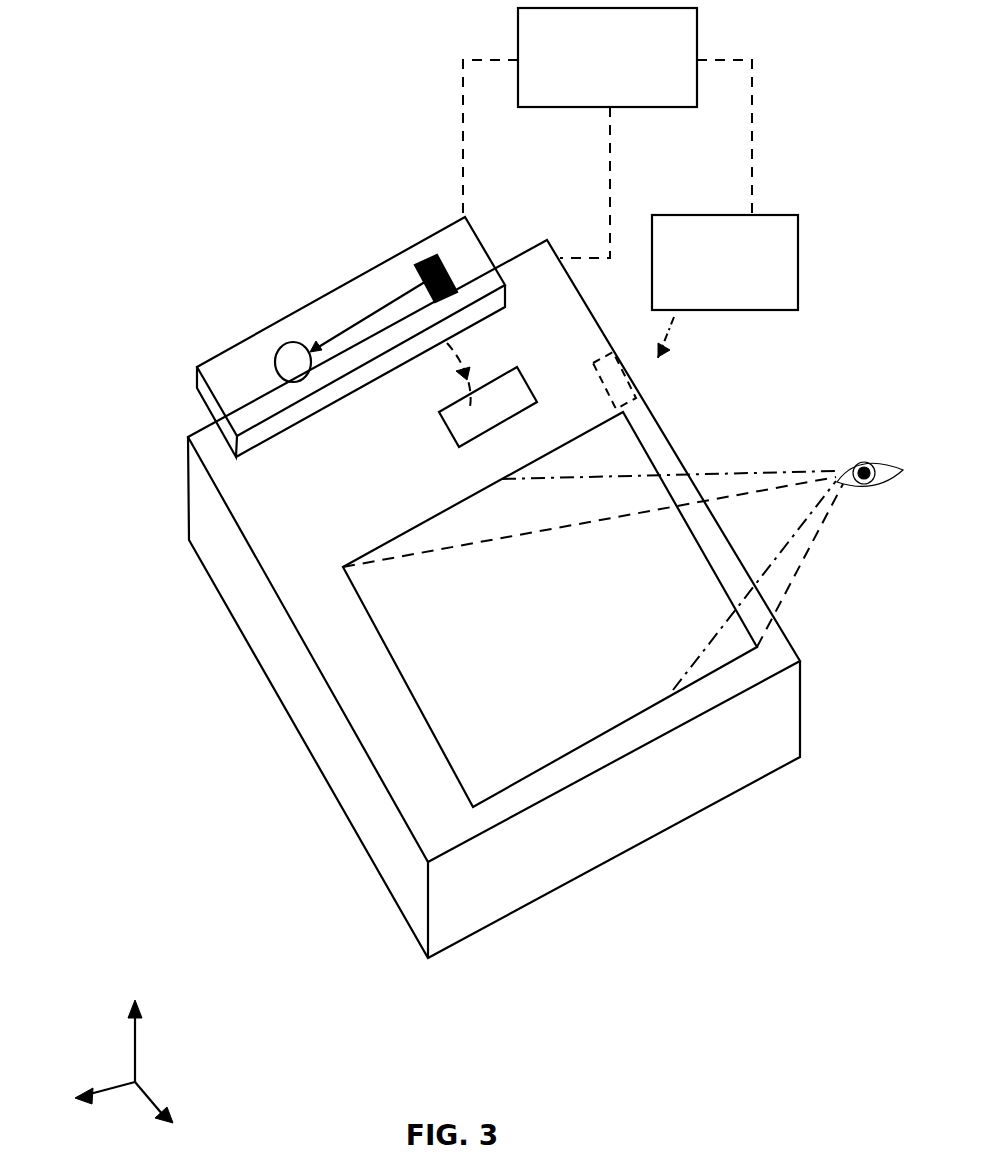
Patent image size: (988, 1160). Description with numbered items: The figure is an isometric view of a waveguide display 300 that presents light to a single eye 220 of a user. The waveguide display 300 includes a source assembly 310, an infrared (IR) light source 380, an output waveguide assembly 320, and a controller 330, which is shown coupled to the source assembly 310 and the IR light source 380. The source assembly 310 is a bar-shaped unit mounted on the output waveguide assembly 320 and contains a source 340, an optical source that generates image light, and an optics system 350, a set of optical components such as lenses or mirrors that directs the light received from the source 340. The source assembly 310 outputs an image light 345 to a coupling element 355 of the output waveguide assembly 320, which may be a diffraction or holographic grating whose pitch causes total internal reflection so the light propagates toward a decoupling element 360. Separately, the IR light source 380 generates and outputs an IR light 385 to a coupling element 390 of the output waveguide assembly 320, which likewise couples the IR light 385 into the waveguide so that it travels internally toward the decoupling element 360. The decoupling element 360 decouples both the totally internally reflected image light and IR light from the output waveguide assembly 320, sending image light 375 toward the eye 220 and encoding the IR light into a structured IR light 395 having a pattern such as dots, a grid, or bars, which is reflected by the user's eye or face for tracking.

The waveguide display 300 is at (88, 54).
The source assembly 310 is at (223, 357).
The output waveguide assembly 320 is at (353, 728).
The controller 330 is at (607, 133).
The source 340 is at (428, 255).
The image light 345 is at (442, 406).
The optics system 350 is at (292, 363).
The coupling element 355 is at (500, 423).
The decoupling element 360 is at (463, 790).
The image light 375 is at (813, 543).
The infrared (IR) light source 380 is at (725, 262).
The IR light 385 is at (672, 333).
The coupling element 390 is at (650, 367).
The structured IR light 395 is at (768, 552).
The eye 220 is at (870, 441).